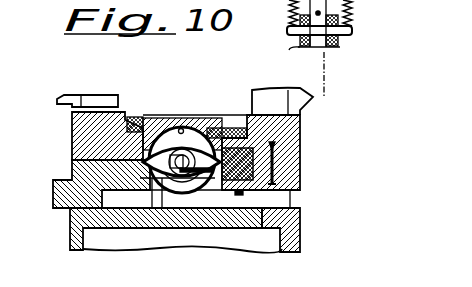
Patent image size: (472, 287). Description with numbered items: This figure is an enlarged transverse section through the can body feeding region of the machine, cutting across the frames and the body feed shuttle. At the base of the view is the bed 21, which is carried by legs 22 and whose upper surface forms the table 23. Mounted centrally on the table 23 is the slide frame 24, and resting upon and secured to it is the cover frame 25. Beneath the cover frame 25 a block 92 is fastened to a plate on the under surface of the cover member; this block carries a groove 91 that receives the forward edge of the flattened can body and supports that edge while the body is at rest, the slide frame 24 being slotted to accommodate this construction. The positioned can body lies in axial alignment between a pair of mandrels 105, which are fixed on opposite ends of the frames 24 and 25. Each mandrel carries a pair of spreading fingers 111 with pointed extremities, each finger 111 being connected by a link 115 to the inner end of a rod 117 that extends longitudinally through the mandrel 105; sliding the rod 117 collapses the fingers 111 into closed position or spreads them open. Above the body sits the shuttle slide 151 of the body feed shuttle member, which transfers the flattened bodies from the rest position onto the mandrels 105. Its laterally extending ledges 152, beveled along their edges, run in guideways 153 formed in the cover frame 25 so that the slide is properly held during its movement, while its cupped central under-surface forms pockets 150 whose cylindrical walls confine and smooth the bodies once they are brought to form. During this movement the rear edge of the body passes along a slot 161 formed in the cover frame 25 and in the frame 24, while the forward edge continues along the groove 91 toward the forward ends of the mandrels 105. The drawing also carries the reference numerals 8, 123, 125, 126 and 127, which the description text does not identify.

The section view direction indicator 8 is at (312, 85).
The bed 21 is at (300, 243).
The legs 22 is at (300, 250).
The table 23 is at (217, 213).
The slide frame 24 is at (90, 168).
The cover frame 25 is at (92, 117).
The groove 91 is at (300, 148).
The block 92 is at (300, 170).
The mandrels 105 is at (210, 127).
The spreading fingers 111 is at (172, 237).
The link 115 is at (229, 237).
The rod 117 is at (212, 202).
The nut 123 is at (340, 44).
The rod 125 is at (330, 5).
The wire 126 is at (281, 48).
The washer plate 127 is at (352, 30).
The pockets 150 is at (181, 129).
The shuttle slide 151 is at (205, 134).
The ledges 152 is at (133, 118).
The guideways 153 is at (300, 127).
The slot 161 is at (152, 147).